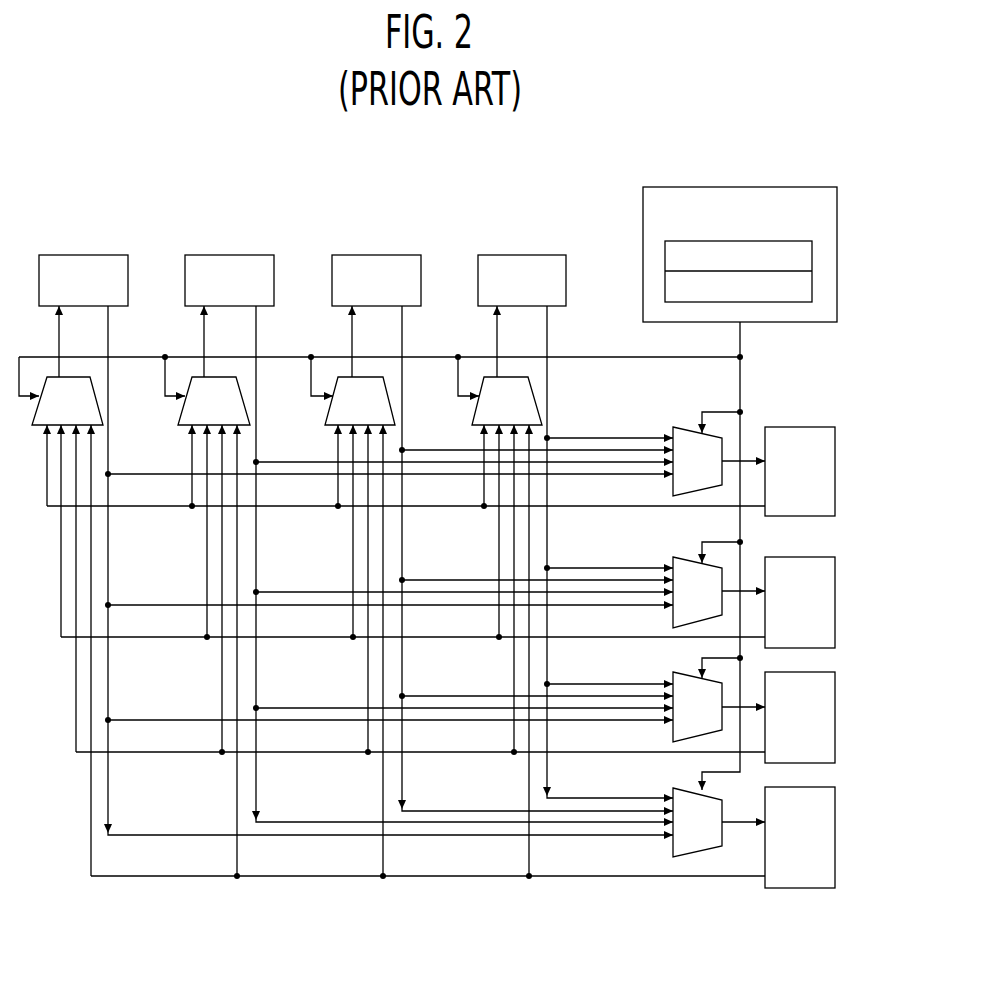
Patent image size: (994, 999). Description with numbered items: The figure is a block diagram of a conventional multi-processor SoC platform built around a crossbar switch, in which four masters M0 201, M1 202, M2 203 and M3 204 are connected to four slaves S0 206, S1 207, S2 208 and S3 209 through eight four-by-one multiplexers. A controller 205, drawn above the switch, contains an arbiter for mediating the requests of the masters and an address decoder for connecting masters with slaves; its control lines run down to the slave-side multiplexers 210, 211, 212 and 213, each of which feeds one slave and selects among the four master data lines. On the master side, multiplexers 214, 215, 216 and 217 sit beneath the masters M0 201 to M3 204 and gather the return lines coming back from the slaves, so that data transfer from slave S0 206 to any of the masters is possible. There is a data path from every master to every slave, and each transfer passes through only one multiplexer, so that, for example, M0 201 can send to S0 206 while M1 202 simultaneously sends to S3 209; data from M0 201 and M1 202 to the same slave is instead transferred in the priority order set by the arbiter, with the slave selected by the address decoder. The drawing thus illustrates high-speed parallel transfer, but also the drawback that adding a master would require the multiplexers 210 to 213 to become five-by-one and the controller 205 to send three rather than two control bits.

The master M0 201 is at (522, 254).
The master M1 202 is at (377, 254).
The master M2 203 is at (230, 254).
The master M3 204 is at (83, 254).
The controller 205 is at (837, 274).
The slave S0 206 is at (835, 470).
The slave S1 207 is at (835, 599).
The slave S2 208 is at (835, 712).
The slave S3 209 is at (835, 833).
The 4x1 multiplexer 210 is at (673, 426).
The 4x1 multiplexer 211 is at (673, 557).
The 4x1 multiplexer 212 is at (672, 674).
The 4x1 multiplexer 213 is at (672, 790).
The master-side multiplexer for M0 214 is at (526, 376).
The master-side multiplexer for M1 215 is at (381, 376).
The master-side multiplexer for M2 216 is at (235, 376).
The master-side multiplexer for M3 217 is at (88, 376).